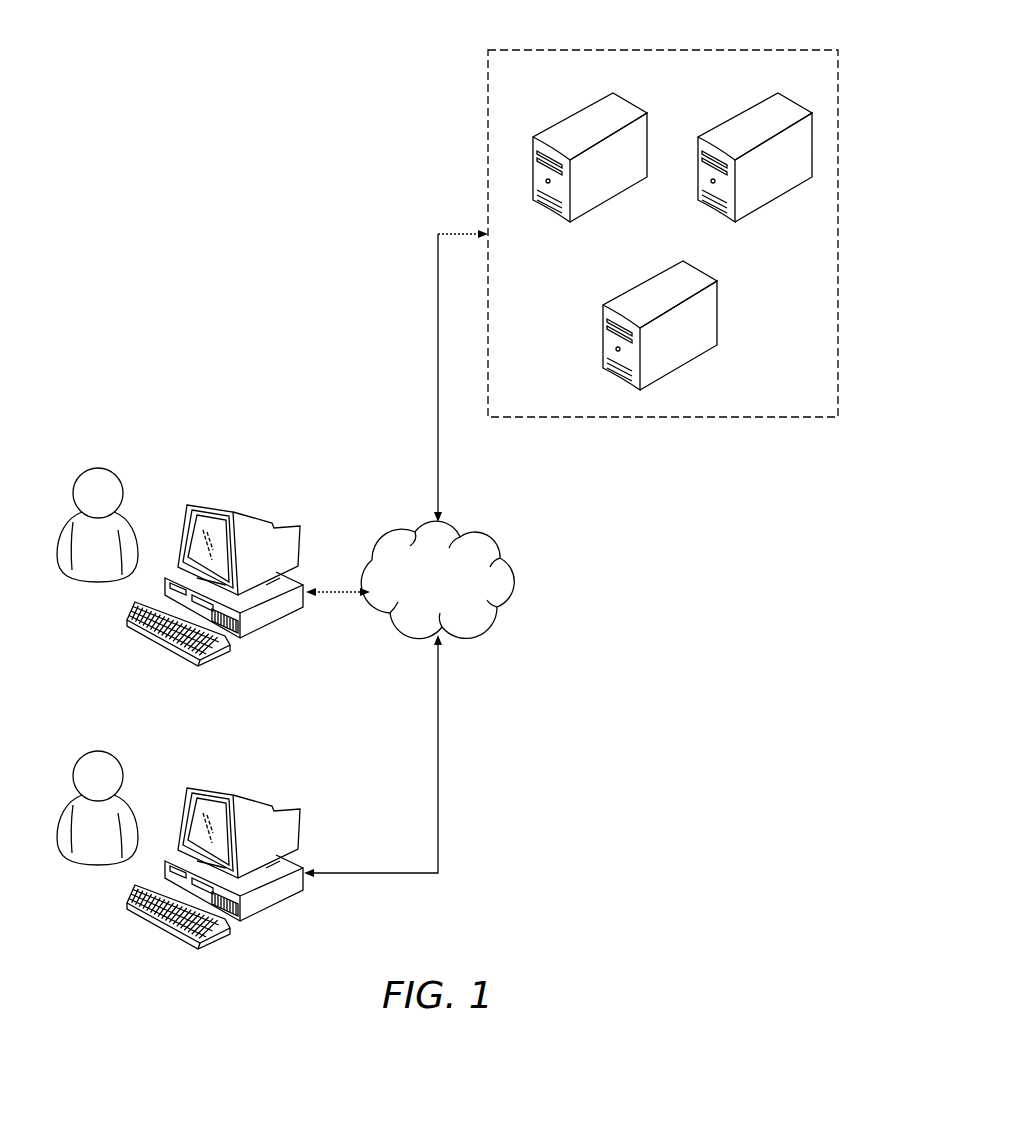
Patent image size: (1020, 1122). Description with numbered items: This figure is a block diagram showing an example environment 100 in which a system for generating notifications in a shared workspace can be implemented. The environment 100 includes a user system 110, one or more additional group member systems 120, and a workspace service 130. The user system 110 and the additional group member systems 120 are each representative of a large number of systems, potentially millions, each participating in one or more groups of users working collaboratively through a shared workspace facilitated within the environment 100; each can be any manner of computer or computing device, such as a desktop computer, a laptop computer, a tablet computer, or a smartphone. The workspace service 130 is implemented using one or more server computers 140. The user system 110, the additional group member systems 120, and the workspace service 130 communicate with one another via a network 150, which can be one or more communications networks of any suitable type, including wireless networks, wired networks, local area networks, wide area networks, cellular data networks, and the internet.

The environment 100 is at (262, 124).
The user system 110 is at (270, 519).
The additional group member system 120 is at (264, 799).
The workspace service 130 is at (714, 50).
The server computer 140 is at (575, 113).
The network 150 is at (481, 526).